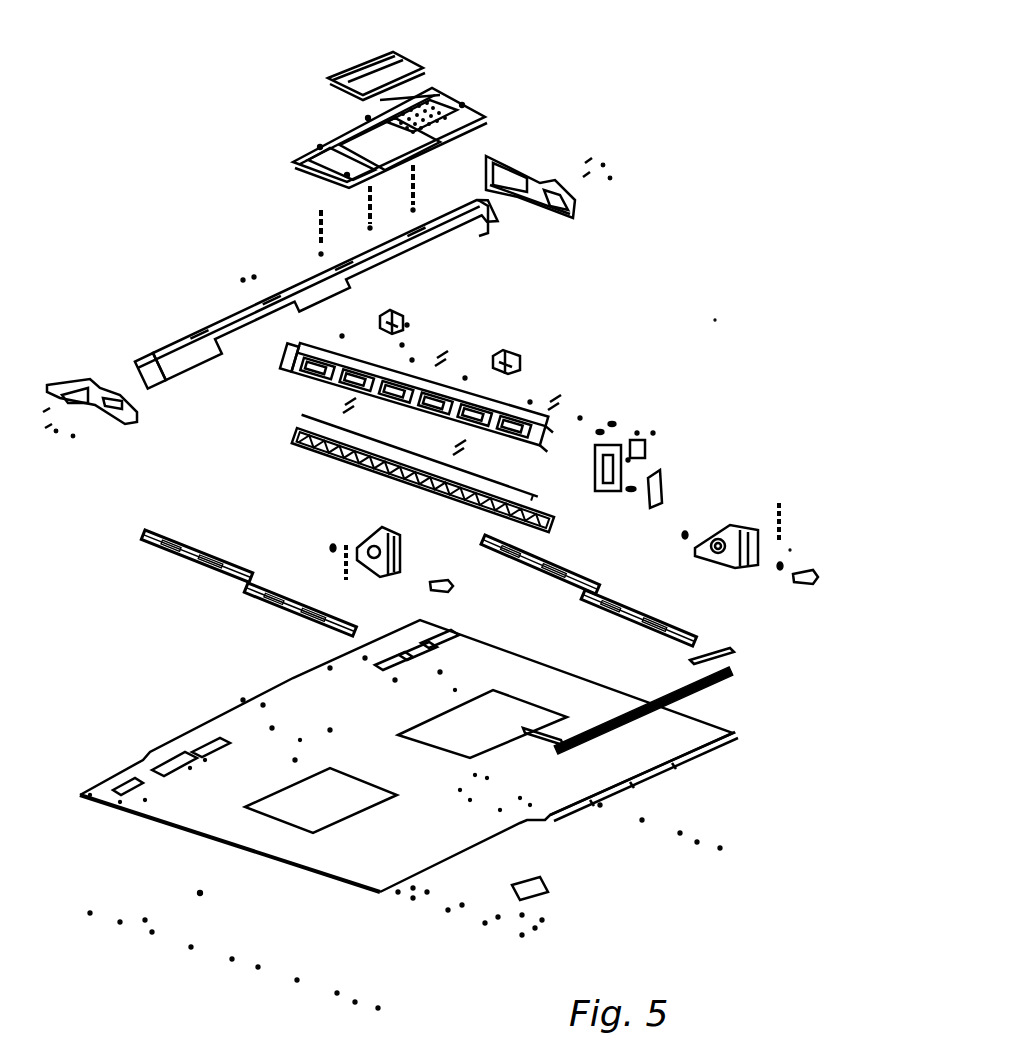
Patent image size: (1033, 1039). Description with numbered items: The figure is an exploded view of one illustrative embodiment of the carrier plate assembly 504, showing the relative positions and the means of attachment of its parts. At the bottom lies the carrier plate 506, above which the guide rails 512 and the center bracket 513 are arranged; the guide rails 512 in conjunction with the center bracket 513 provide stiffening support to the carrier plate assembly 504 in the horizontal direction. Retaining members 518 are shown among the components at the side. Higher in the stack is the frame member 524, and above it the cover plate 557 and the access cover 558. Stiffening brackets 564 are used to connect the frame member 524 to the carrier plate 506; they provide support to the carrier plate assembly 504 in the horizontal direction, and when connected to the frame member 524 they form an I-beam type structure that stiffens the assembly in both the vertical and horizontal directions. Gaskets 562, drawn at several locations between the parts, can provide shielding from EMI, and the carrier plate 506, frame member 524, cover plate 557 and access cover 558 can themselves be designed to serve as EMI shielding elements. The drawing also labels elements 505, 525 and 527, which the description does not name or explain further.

The carrier plate assembly 504 is at (722, 323).
The base plate 505 is at (343, 810).
The carrier plate 506 is at (703, 733).
The guide rails 512 is at (547, 530).
The center bracket 513 is at (533, 375).
The retaining members 518 is at (807, 547).
The frame member 524 is at (172, 357).
The cross member end 525 is at (473, 223).
The pins 527 is at (317, 223).
The cover plate 557 is at (457, 97).
The access cover 558 is at (348, 70).
The gaskets 562 is at (410, 342).
The stiffening brackets 564 is at (513, 165).